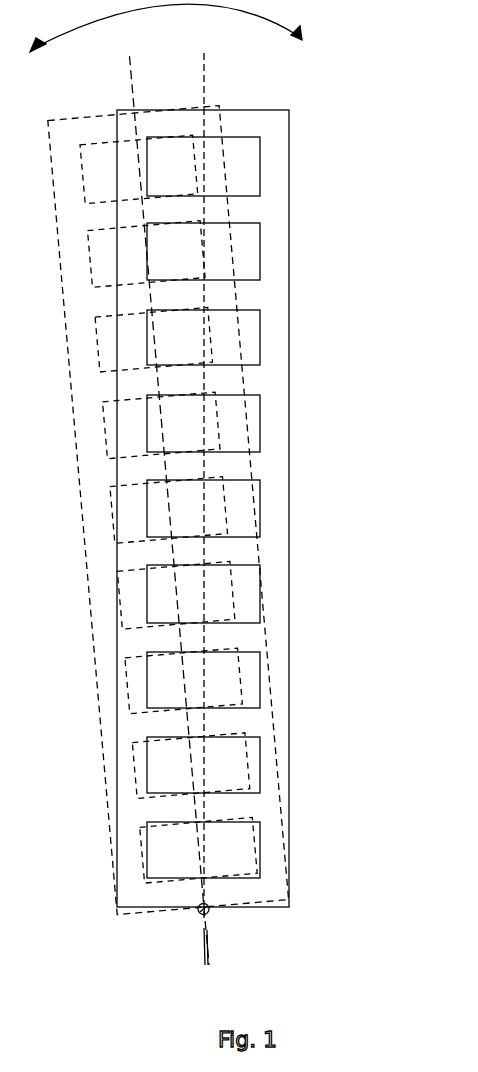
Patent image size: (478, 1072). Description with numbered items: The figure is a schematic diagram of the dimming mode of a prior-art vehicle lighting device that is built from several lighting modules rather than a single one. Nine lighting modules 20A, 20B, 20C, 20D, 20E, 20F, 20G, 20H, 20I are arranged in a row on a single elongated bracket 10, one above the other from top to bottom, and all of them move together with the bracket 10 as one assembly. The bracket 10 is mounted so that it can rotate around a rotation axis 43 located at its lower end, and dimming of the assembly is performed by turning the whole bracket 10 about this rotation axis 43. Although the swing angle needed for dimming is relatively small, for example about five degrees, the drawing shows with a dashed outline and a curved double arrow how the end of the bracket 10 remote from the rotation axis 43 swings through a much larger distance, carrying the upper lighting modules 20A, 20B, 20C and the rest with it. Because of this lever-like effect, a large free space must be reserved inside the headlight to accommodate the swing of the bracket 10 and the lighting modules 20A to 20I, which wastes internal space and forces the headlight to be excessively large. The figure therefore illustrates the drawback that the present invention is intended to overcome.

The bracket 10 is at (275, 138).
The lighting module 20A is at (248, 173).
The lighting module 20B is at (248, 257).
The lighting module 20C is at (248, 341).
The lighting module 20D is at (252, 422).
The lighting module 20E is at (252, 505).
The lighting module 20F is at (248, 593).
The lighting module 20G is at (250, 676).
The lighting module 20H is at (252, 765).
The lighting module 20I is at (250, 848).
The rotation axis 43 is at (209, 913).